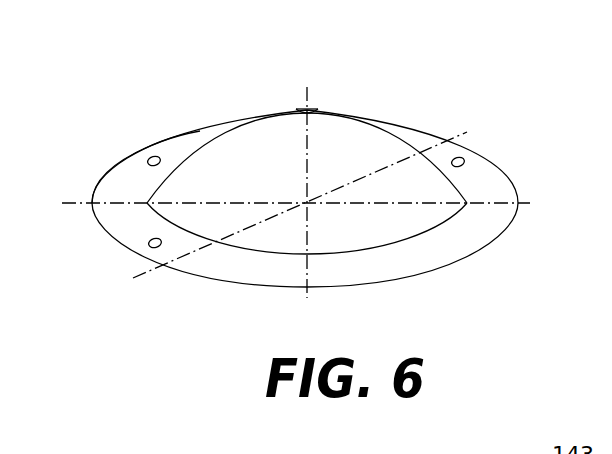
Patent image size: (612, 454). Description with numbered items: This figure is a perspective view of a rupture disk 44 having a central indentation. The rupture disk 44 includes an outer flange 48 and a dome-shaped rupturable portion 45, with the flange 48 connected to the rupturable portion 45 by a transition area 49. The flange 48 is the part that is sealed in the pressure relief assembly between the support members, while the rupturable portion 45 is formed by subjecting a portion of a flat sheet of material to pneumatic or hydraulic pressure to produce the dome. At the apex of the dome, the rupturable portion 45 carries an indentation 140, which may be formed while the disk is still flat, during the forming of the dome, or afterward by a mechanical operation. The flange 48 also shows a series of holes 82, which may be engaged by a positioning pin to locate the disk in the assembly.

The rupture disk 44 is at (210, 75).
The rupturable portion 45 is at (390, 128).
The flange 48 is at (110, 182).
The transition area 49 is at (444, 220).
The holes 82 is at (156, 156).
The indentation 140 is at (317, 108).